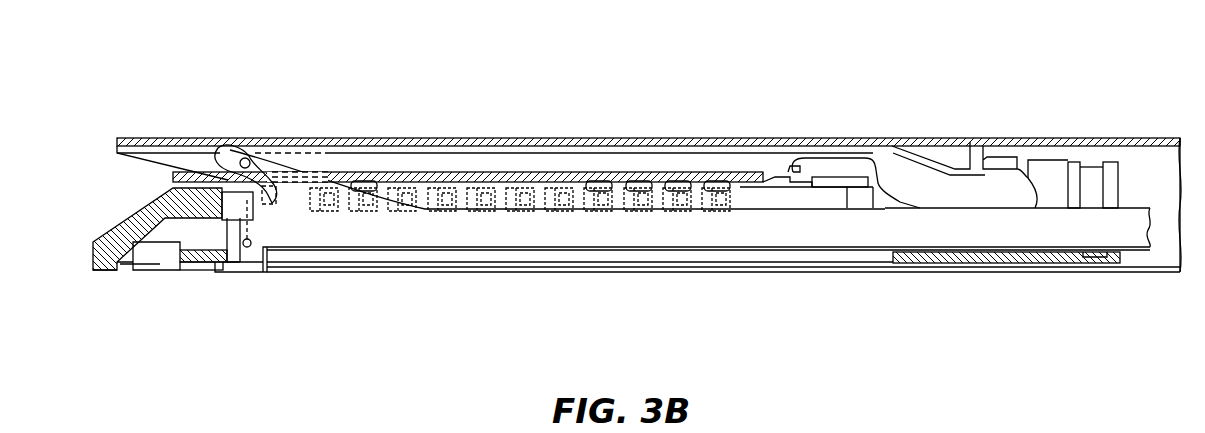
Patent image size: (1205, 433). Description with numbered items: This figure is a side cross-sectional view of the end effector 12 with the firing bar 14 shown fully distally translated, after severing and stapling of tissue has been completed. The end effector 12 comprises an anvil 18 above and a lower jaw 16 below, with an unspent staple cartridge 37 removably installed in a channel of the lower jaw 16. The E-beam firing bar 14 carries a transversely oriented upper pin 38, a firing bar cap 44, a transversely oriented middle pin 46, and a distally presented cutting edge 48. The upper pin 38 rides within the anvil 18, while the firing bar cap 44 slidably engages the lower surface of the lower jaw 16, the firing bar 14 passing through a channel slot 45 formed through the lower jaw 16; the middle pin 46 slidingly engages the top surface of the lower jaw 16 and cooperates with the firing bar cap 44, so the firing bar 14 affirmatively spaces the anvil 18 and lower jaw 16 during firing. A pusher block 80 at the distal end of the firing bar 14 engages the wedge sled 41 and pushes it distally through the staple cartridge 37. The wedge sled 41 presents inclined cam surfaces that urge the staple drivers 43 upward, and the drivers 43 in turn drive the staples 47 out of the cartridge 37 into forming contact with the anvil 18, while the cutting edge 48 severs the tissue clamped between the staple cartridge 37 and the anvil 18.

The end effector 12 is at (558, 86).
The firing bar 14 is at (443, 236).
The lower jaw 16 is at (960, 273).
The anvil 18 is at (739, 137).
The staple cartridge 37 is at (110, 211).
The upper pin 38 is at (245, 157).
The wedge sled 41 is at (178, 233).
The staple drivers 43 is at (610, 212).
The firing bar cap 44 is at (268, 265).
The channel slot 45 is at (512, 256).
The middle pin 46 is at (247, 248).
The staples 47 is at (604, 182).
The cutting edge 48 is at (266, 193).
The pusher block 80 is at (220, 232).